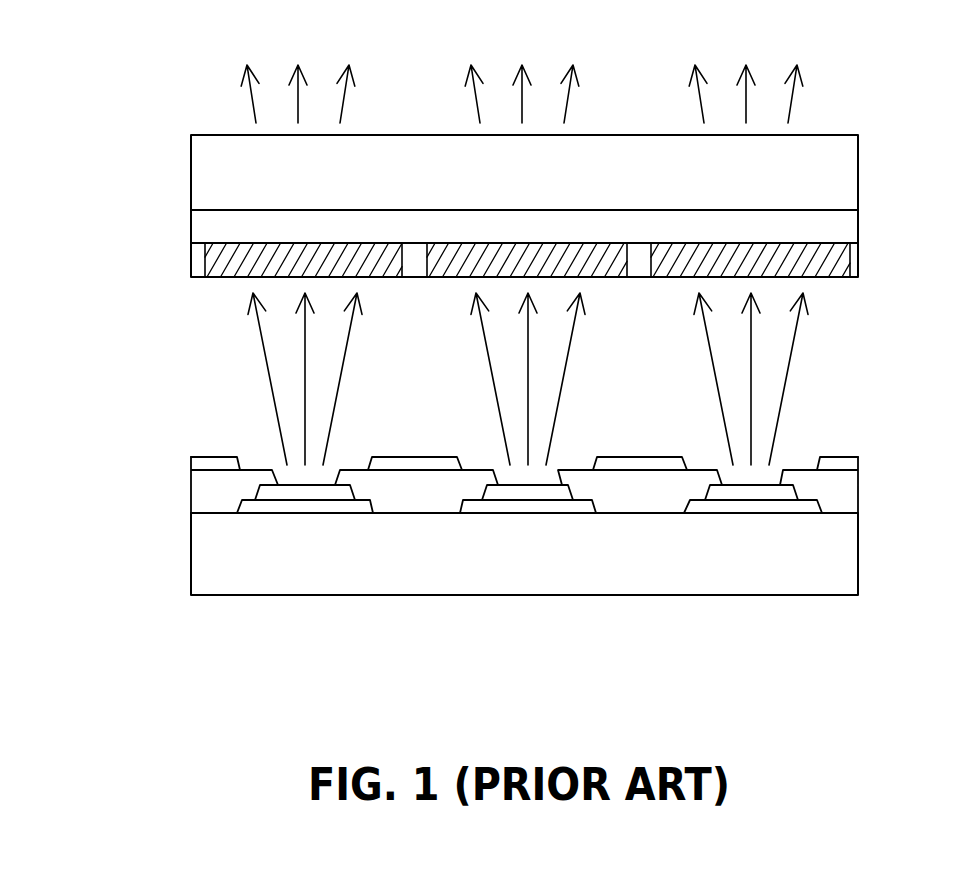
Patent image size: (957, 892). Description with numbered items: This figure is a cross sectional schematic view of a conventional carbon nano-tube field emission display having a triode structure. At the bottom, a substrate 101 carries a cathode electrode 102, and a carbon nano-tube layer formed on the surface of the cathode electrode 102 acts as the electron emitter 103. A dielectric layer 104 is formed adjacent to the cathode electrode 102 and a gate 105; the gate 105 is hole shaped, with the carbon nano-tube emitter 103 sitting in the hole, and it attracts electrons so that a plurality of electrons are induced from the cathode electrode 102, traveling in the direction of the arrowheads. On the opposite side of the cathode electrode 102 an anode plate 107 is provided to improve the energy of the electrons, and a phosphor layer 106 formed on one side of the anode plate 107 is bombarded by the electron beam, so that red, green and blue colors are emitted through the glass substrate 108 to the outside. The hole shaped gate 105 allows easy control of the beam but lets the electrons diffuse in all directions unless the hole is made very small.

The substrate 101 is at (205, 534).
The cathode electrode 102 is at (305, 507).
The electron emitter 103 is at (322, 495).
The dielectric layer 104 is at (202, 485).
The gate 105 is at (202, 463).
The phosphor layer 106 is at (210, 262).
The anode plate 107 is at (197, 223).
The glass substrate 108 is at (202, 167).